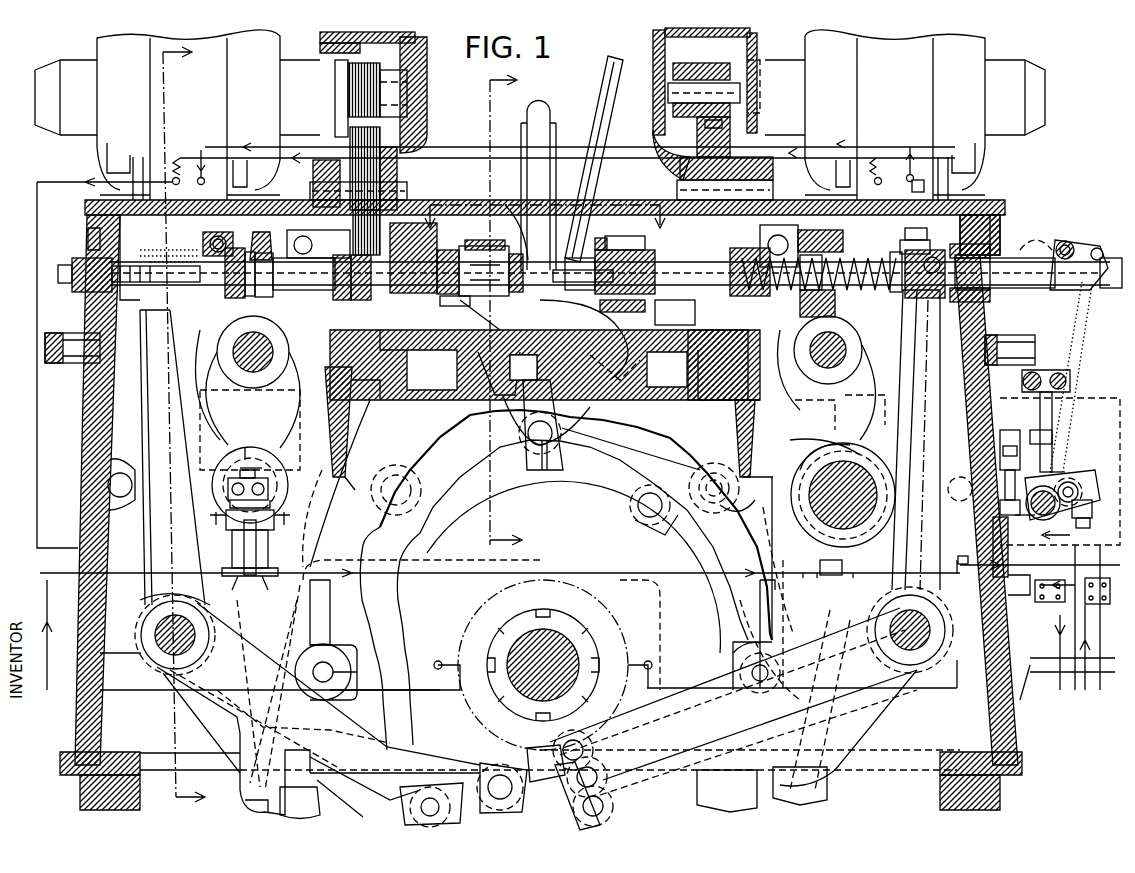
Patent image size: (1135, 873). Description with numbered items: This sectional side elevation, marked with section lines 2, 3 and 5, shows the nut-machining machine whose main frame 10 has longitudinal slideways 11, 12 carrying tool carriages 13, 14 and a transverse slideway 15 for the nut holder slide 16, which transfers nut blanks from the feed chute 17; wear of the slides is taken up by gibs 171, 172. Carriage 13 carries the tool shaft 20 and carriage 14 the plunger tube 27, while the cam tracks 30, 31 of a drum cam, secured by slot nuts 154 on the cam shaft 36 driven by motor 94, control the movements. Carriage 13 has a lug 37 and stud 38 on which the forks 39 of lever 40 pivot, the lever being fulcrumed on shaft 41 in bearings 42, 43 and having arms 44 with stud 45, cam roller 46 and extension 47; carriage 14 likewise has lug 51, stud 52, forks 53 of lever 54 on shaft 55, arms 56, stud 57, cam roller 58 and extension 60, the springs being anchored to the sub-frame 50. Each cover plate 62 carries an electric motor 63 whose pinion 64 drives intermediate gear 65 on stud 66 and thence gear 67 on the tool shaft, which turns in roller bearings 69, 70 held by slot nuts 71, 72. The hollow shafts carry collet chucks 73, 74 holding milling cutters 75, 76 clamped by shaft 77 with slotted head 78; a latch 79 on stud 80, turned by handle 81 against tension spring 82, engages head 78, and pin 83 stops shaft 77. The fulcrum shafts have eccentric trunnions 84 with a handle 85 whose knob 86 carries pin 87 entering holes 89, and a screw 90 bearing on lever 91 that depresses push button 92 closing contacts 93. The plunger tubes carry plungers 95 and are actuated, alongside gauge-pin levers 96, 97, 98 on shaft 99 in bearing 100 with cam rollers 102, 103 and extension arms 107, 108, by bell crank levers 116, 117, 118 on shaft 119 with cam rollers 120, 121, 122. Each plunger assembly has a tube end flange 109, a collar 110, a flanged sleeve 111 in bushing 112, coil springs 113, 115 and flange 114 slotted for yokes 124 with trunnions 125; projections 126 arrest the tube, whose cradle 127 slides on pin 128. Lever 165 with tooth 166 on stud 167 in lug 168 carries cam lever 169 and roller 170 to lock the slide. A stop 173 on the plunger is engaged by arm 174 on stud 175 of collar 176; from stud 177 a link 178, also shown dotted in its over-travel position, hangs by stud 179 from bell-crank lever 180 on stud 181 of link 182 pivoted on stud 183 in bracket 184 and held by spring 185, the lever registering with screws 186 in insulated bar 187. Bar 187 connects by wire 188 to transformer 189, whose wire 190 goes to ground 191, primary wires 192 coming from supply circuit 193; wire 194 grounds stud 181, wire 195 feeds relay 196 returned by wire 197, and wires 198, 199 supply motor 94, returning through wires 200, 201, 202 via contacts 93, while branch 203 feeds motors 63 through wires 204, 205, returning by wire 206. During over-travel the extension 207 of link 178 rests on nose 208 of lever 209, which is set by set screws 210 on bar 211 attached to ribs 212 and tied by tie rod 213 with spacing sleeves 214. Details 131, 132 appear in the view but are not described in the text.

The section line 2- 2 is at (179, 431).
The section line 3- 3 is at (543, 203).
The section line 5- 5 is at (497, 309).
The main frame 10 is at (100, 512).
The longitudinal slideway 11 is at (112, 365).
The longitudinal slideway 12 is at (698, 378).
The tool carriage 13 is at (90, 228).
The tool carriage 14 is at (1005, 240).
The transverse slideway 15 is at (505, 355).
The nut holder slide 16 is at (549, 122).
The feed chute 17 is at (605, 95).
The tool shaft 20 is at (300, 290).
The nut transferring plunger tube 27 is at (655, 235).
The cam track 30 is at (628, 430).
The cam track 31 is at (572, 579).
The cam shaft 36 is at (507, 663).
The lug 37 is at (222, 365).
The stud 38 is at (278, 365).
The forks 39 is at (198, 400).
The lever 40 is at (252, 440).
The shaft 41 is at (258, 468).
The bearing 42 is at (345, 405).
The bearing 43 is at (348, 430).
The arms 44 is at (318, 603).
The stud 45 is at (305, 660).
The cam roller 46 is at (345, 650).
The extension 47 is at (293, 800).
The sub-frame 50 is at (100, 790).
The lug 51 is at (846, 288).
The stud 52 is at (818, 388).
The forks 53 is at (875, 412).
The lever 54 is at (800, 430).
The shaft 55 is at (800, 448).
The arms 56 is at (785, 615).
The stud 57 is at (788, 674).
The cam roller 58 is at (752, 648).
The extension 60 is at (828, 788).
The cover plate 62 is at (412, 40).
The electric motor 63 is at (98, 92).
The pinion 64 is at (395, 92).
The intermediate gear 65 is at (427, 125).
The stud 66 is at (408, 185).
The gear 67 is at (362, 302).
The roller bearing 69 is at (262, 240).
The roller bearing 70 is at (440, 245).
The slot nut 71 is at (248, 296).
The slot nut 72 is at (340, 300).
The collet chuck 73 is at (478, 245).
The collet chuck 74 is at (620, 250).
The milling cutter 75 is at (515, 250).
The milling cutter 76 is at (570, 250).
The shaft 77 is at (462, 300).
The slotted head 78 is at (228, 296).
The latch 79 is at (205, 240).
The stud 80 is at (226, 238).
The handle 81 is at (160, 288).
The tension spring 82 is at (175, 255).
The pin 83 is at (82, 262).
The eccentric trunnion 84 is at (290, 460).
The handle 85 is at (335, 515).
The knob 86 is at (402, 490).
The pin 87 is at (396, 468).
The holes 89 is at (108, 482).
The screw 90 is at (290, 482).
The lever 91 is at (270, 545).
The push button 92 is at (268, 565).
The contacts 93 is at (252, 580).
The motor 94 is at (618, 612).
The plunger 95 is at (612, 235).
The lever 96 is at (138, 418).
The lever 97 is at (180, 718).
The lever 98 is at (230, 735).
The shaft 99 is at (150, 615).
The bearing 100 is at (142, 655).
The cam roller 102 is at (488, 787).
The cam roller 103 is at (520, 757).
The extension arm 107 is at (238, 790).
The extension arm 108 is at (245, 808).
The end flange 109 is at (768, 246).
The collar 110 is at (805, 250).
The flanged sleeve 111 is at (1015, 262).
The bushing 112 is at (1000, 240).
The coil spring 113 is at (800, 292).
The flange 114 is at (912, 248).
The coil spring 115 is at (872, 258).
The bell crank lever 116 is at (905, 425).
The bell crank lever 117 is at (885, 718).
The bell crank lever 118 is at (848, 702).
The shaft 119 is at (945, 640).
The cam roller 120 is at (590, 745).
The cam roller 121 is at (600, 780).
The cam roller 122 is at (612, 808).
The yoke 124 is at (925, 240).
The trunnion 125 is at (915, 292).
The projection 126 is at (670, 310).
The semi-hexagonal cradle 127 is at (565, 305).
The pin 128 is at (620, 300).
The cam surface 131 is at (498, 302).
The cam surface 132 is at (510, 210).
The slot nut 154 is at (500, 625).
The lever 165 is at (530, 470).
The tooth 166 is at (530, 360).
The stud 167 is at (528, 440).
The lug 168 is at (500, 412).
The cam lever 169 is at (605, 442).
The cam roller 170 is at (640, 512).
The gib 171 is at (78, 333).
The gib 172 is at (618, 365).
The stop 173 is at (1095, 285).
The arm 174 is at (1085, 240).
The stud 175 is at (1100, 252).
The collar 176 is at (1068, 318).
The stud 177 is at (1070, 240).
The link 178 is at (1035, 250).
The stud 179 is at (1068, 381).
The bell-crank lever 180 is at (1052, 392).
The stud 181 is at (1065, 372).
The link 182 is at (1022, 380).
The stud 183 is at (1043, 492).
The bracket 184 is at (1000, 432).
The spring 185 is at (1040, 430).
The screw 186 is at (1000, 448).
The insulated bar 187 is at (1002, 470).
The wire 188 is at (1028, 518).
The transformer 189 is at (1088, 625).
The wire 190 is at (1090, 565).
The ground connection 191 is at (1000, 540).
The wires 192 is at (1095, 645).
The supply circuit 193 is at (1035, 668).
The wire 194 is at (1100, 398).
The wire 195 is at (1060, 565).
The relay 196 is at (1042, 594).
The wire 197 is at (1028, 578).
The wire 198 is at (1098, 608).
The wire 199 is at (955, 680).
The wire 200 is at (395, 690).
The wire 201 is at (635, 573).
The wire 202 is at (1048, 690).
The branch 203 is at (912, 185).
The wire 204 is at (205, 158).
The wire 205 is at (176, 158).
The wire 206 is at (37, 262).
The extension 207 is at (1060, 475).
The nose 208 is at (1080, 488).
The lever 209 is at (1090, 505).
The set screw 210 is at (1062, 518).
The bar 211 is at (1090, 520).
The ribs 212 is at (1088, 478).
The tie rod 213 is at (1075, 480).
The spacing sleeve 214 is at (1078, 485).